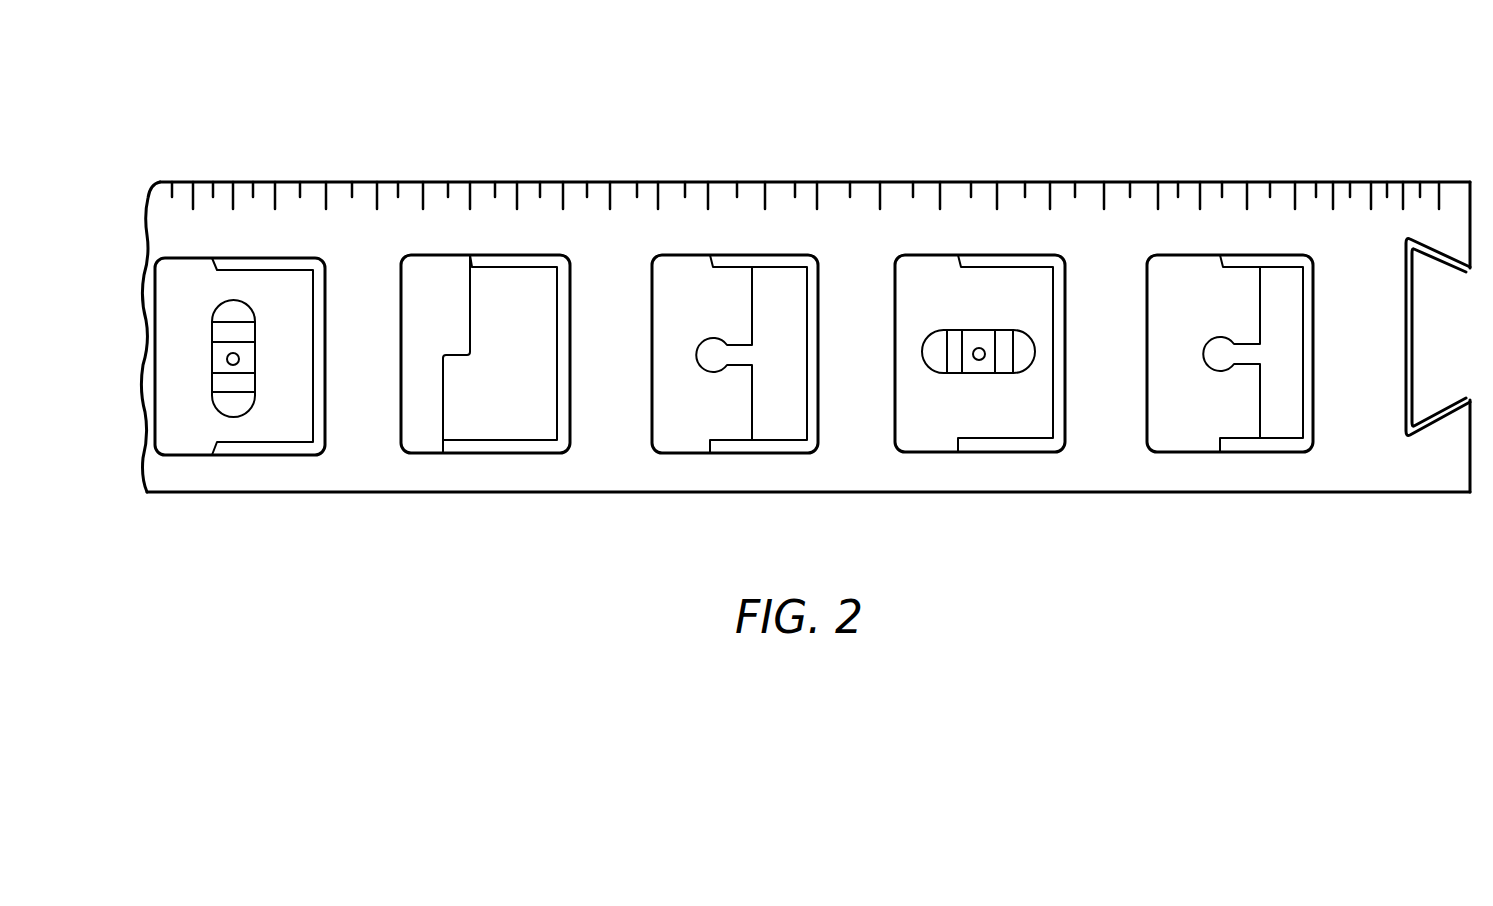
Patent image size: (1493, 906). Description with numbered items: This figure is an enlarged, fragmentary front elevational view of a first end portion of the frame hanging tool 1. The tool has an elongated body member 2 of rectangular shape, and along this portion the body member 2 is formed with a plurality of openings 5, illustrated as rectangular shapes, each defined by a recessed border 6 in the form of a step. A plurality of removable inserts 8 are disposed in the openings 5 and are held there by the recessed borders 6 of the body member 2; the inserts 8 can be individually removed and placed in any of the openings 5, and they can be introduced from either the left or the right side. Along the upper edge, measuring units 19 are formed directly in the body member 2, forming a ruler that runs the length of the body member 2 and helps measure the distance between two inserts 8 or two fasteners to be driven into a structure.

The frame hanging tool 1 is at (1172, 95).
The body member 2 is at (337, 482).
The openings 5 is at (1285, 425).
The recessed borders 6 is at (1308, 425).
The removable inserts 8 is at (762, 397).
The measuring units 19 is at (900, 186).